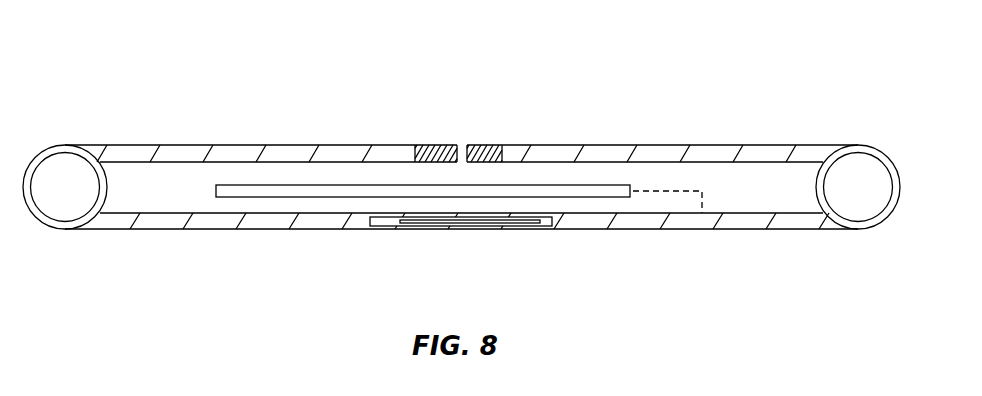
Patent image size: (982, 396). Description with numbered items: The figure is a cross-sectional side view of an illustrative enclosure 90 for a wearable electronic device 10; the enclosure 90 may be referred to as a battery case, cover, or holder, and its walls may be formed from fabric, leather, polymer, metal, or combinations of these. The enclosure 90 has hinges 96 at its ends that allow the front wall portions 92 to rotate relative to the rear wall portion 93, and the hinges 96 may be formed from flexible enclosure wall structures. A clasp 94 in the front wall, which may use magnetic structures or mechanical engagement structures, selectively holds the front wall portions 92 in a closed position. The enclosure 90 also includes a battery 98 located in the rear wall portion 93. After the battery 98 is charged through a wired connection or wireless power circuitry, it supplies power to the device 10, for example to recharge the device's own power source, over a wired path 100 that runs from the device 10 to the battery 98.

The enclosure 90 is at (833, 62).
The front wall portions 92 is at (285, 152).
The rear wall portion 93 is at (732, 230).
The clasp 94 is at (432, 146).
The hinges 96 is at (59, 198).
The battery 98 is at (526, 230).
The device 10 is at (598, 185).
The wired path 100 is at (665, 190).